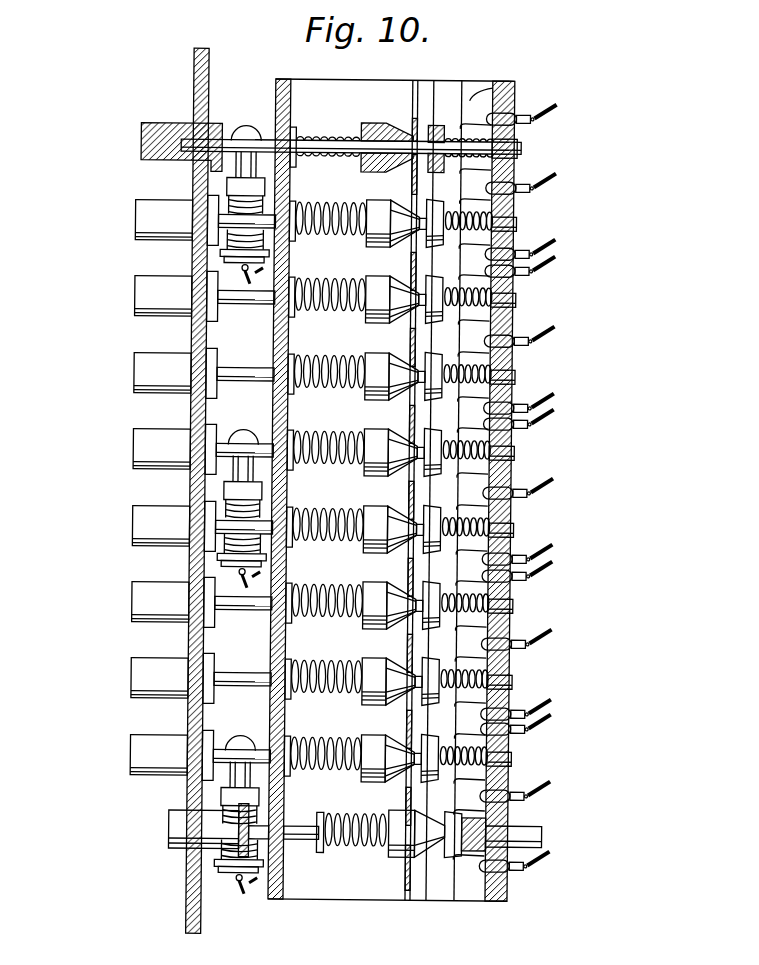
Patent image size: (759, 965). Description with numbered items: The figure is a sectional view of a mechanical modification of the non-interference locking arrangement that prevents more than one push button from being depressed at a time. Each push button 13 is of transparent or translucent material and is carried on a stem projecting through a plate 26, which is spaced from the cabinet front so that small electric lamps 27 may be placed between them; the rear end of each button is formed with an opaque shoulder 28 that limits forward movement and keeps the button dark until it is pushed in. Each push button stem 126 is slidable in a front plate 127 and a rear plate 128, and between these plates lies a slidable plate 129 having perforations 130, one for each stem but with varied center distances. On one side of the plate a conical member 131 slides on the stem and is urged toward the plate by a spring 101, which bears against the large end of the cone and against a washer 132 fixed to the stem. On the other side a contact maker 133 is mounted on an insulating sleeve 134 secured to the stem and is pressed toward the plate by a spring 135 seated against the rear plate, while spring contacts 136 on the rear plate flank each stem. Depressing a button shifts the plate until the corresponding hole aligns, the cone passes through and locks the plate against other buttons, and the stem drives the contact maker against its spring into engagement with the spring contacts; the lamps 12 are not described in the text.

The lamp 12 is at (232, 181).
The push button 13 is at (138, 141).
The plate 26 is at (288, 194).
The electric lamp 27 is at (237, 172).
The shoulder 28 is at (213, 110).
The spring 101 is at (360, 440).
The push button stem 126 is at (268, 137).
The front plate 127 is at (268, 308).
The rear plate 128 is at (512, 318).
The slidable plate 129 is at (413, 130).
The perforation 130 is at (414, 166).
The conical member 131 is at (372, 233).
The washer 132 is at (273, 406).
The contact maker 133 is at (415, 320).
The insulating sleeve 134 is at (438, 126).
The spring 135 is at (512, 606).
The spring contact 136 is at (512, 84).